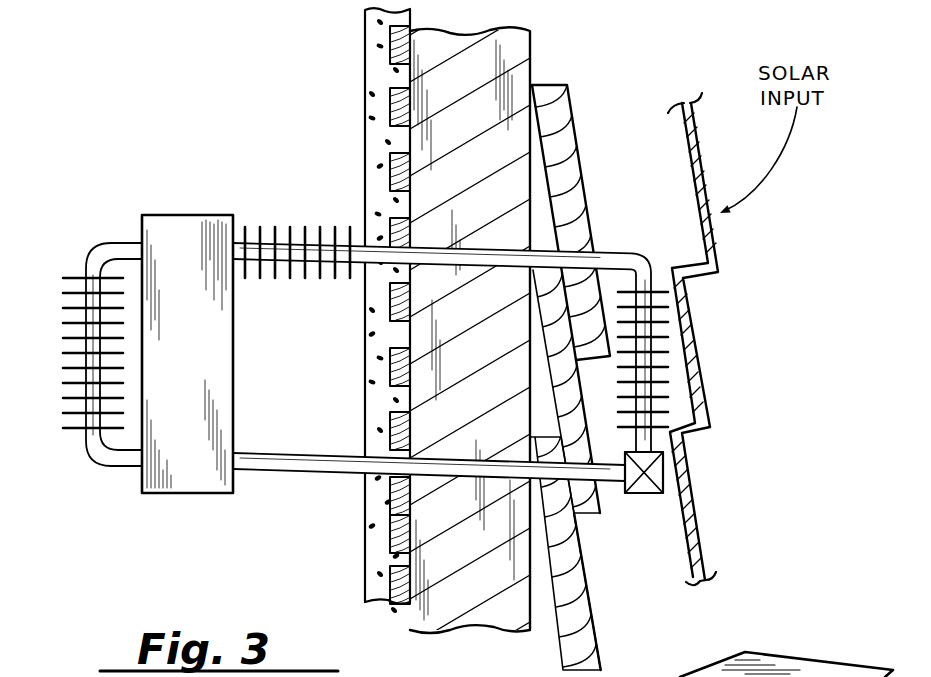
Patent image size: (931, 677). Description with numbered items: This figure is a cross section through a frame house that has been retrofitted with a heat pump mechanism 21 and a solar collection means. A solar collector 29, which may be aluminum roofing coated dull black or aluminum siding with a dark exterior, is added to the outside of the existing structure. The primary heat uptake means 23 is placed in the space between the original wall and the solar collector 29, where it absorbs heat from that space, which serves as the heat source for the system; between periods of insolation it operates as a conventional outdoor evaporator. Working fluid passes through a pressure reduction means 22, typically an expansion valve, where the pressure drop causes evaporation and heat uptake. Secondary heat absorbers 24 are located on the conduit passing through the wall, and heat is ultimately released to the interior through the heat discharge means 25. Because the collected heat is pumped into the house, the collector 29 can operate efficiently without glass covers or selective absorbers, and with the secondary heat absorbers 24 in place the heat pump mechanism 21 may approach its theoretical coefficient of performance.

The heat pump mechanism 21 is at (187, 480).
The pressure reduction means 22 is at (643, 493).
The heat uptake means 23 is at (660, 367).
The secondary heat absorbers 24 is at (317, 278).
The heat discharge means 25 is at (72, 365).
The solar collector 29 is at (697, 525).